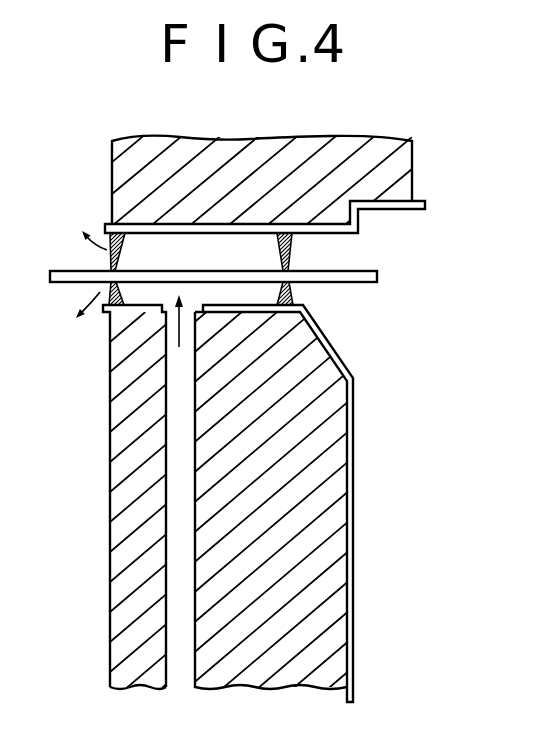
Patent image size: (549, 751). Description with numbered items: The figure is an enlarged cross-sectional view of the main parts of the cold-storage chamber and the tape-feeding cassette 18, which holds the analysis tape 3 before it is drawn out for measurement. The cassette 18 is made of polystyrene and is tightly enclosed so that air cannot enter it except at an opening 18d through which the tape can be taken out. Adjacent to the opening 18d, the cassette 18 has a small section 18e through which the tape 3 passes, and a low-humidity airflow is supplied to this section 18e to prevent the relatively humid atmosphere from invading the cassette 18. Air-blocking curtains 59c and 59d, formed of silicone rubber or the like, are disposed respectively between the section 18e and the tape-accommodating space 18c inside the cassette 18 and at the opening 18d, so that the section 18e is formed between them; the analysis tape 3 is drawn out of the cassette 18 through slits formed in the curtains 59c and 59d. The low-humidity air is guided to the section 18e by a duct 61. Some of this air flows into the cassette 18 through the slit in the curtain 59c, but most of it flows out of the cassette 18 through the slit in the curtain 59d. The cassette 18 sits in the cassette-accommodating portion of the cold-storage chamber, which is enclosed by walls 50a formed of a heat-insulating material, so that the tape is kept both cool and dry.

The analysis tape 3 is at (362, 283).
The tape-feeding cassette 18 is at (355, 547).
The tape-accommodating space 18c is at (445, 490).
The opening 18d is at (105, 247).
The small section 18e is at (235, 242).
The walls 50a is at (323, 398).
The air-blocking curtain 59c is at (290, 293).
The air-blocking curtain 59d is at (120, 293).
The duct 61 is at (173, 525).